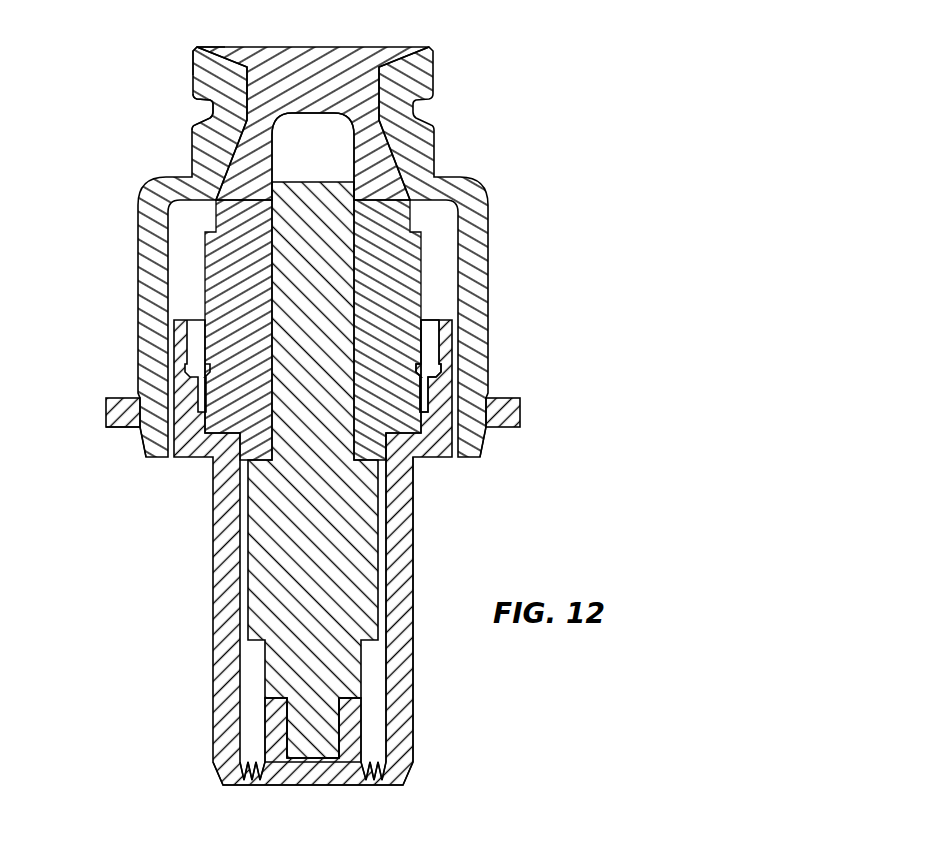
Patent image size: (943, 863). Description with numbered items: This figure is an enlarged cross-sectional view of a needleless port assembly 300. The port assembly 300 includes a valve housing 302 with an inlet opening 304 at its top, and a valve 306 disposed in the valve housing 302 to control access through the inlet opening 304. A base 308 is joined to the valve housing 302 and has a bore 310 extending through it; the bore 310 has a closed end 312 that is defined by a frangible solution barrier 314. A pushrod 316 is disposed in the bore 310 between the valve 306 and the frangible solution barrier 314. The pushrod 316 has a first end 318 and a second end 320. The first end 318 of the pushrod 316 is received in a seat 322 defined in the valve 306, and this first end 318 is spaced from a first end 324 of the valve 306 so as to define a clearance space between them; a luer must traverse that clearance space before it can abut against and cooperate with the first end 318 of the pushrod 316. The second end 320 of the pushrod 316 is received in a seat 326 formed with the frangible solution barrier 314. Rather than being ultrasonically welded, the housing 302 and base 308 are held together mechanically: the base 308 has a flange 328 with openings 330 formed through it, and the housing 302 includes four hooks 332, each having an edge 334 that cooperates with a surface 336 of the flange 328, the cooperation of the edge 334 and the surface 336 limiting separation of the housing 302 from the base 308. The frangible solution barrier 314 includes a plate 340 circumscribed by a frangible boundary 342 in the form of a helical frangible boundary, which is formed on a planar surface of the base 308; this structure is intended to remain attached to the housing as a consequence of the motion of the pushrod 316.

The port assembly 300 is at (306, 420).
The valve housing 302 is at (417, 135).
The inlet opening 304 is at (233, 46).
The valve 306 is at (387, 265).
The base 308 is at (407, 560).
The bore 310 is at (403, 597).
The closed end 312 is at (410, 753).
The frangible solution barrier 314 is at (380, 777).
The pushrod 316 is at (327, 552).
The first end 318 is at (350, 200).
The second end 320 is at (343, 706).
The seat 322 is at (210, 107).
The first end 324 is at (197, 50).
The seat 326 is at (278, 700).
The flange 328 is at (513, 398).
The openings 330 is at (460, 385).
The hooks 332 is at (147, 443).
The edge 334 is at (137, 420).
The surface 336 is at (108, 428).
The plate 340 is at (313, 767).
The frangible boundary 342 is at (245, 773).